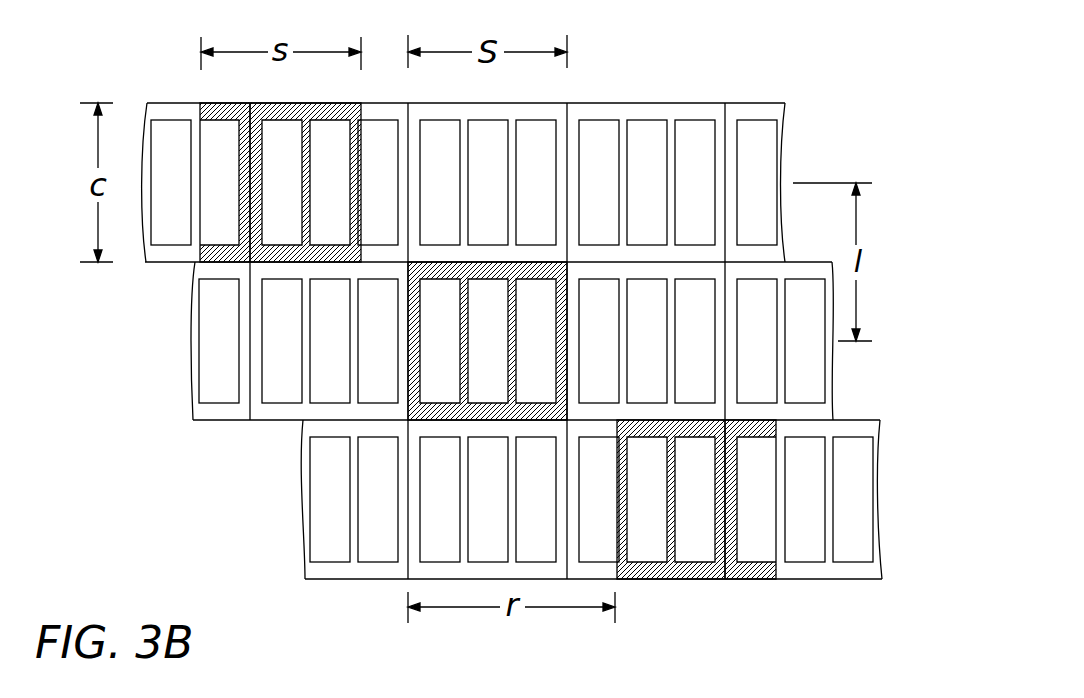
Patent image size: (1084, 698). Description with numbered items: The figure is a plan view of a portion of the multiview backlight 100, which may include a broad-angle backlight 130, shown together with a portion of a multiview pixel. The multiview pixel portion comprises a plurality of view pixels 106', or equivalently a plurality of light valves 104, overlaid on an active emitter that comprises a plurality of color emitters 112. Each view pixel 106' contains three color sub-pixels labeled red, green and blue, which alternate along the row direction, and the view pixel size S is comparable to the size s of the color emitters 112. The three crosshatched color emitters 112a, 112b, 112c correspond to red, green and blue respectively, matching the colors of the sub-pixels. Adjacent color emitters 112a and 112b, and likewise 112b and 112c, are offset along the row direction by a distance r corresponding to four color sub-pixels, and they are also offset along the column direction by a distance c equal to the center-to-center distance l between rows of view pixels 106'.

The multiview backlight 100 is at (514, 322).
The broad-angle backlight 130 is at (770, 58).
The light valve 104 is at (463, 162).
The view pixel 106' is at (463, 162).
The color emitter 112 is at (168, 411).
The color emitter 112a is at (210, 104).
The color emitter 112b is at (408, 412).
The color emitter 112c is at (693, 576).